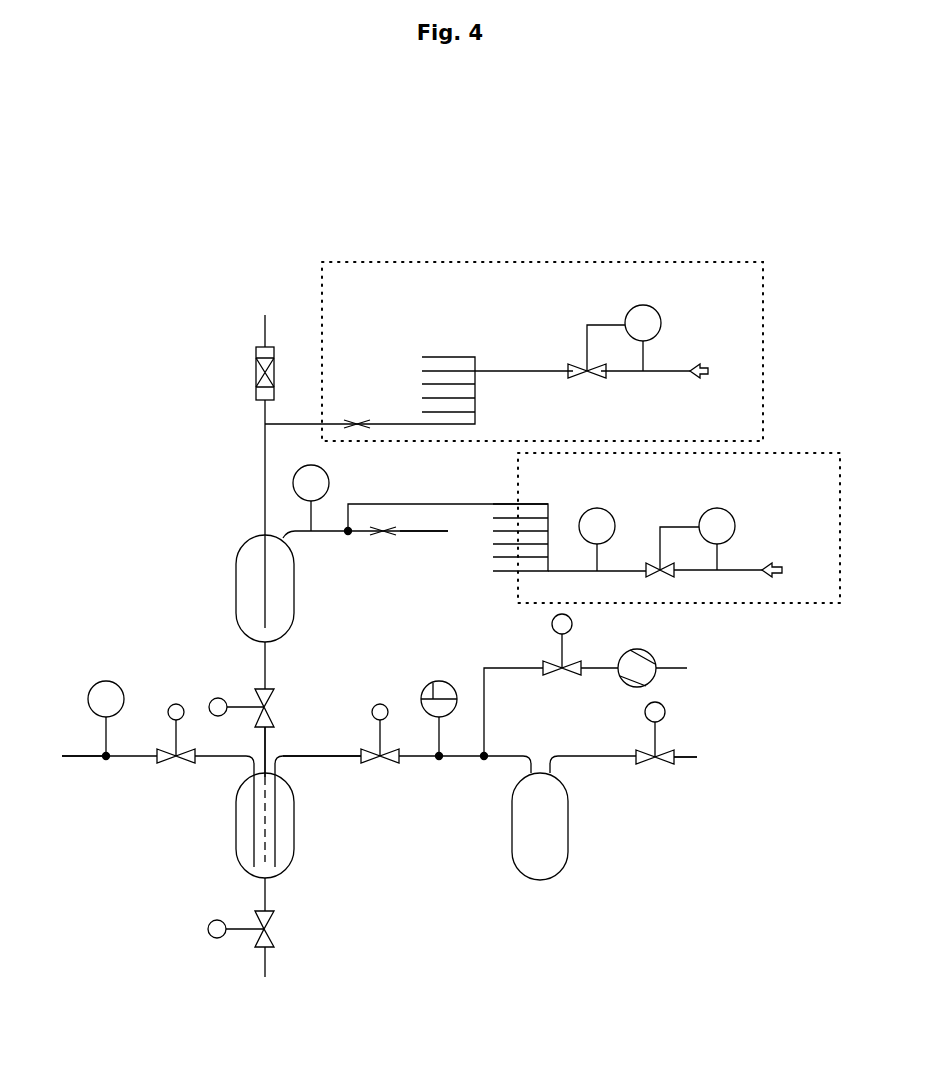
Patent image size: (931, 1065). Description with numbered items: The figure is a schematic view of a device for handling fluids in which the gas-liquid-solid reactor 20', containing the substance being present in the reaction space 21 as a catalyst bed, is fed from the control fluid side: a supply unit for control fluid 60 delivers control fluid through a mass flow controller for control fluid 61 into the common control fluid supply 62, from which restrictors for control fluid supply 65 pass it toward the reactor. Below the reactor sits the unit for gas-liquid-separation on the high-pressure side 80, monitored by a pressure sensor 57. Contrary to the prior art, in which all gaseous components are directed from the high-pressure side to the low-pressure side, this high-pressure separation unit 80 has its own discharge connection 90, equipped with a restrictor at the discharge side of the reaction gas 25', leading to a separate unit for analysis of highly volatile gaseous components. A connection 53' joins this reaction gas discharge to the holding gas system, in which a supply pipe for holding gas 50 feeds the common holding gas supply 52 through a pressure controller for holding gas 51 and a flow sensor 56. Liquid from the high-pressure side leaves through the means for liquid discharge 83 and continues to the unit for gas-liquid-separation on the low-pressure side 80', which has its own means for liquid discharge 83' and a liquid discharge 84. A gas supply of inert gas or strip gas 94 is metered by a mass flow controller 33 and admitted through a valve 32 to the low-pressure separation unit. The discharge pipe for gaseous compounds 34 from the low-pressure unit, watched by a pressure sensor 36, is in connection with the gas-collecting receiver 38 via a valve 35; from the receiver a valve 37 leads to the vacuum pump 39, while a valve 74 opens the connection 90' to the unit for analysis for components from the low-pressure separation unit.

The common control fluid supply 62 is at (430, 262).
The mass flow controller for control fluid 61 is at (577, 367).
The supply unit for control fluid 60 is at (705, 367).
The restrictors for control fluid supply 65 is at (367, 422).
The gas-liquid-solid reactor 20' is at (201, 360).
The substance being present in the reaction space 21 is at (257, 387).
The unit for gas-liquid-separation (high-pressure side) 80 is at (210, 588).
The pressure sensor 57 is at (330, 482).
The connection (holding gas supply—reaction gas discharge) 53' is at (480, 516).
The discharge connection from high-pressure separation unit to unit for analysis 90 is at (438, 531).
The restrictors at the discharge side of the reaction gas 25' is at (401, 553).
The flow sensor 56 is at (590, 510).
The pressure controller for holding gas 51 is at (707, 512).
The supply pipe for holding gas 50 is at (773, 565).
The common holding gas supply 52 is at (750, 603).
The vacuum pump 39 is at (648, 653).
The valve between gas-collecting receiver and vacuum pump 37 is at (545, 672).
The pressure sensor 36 is at (433, 688).
The mass flow controller 33 is at (100, 693).
The gas supply (inert gas or strip gas) 94 is at (66, 755).
The valve in pipe to the low-pressure separation unit 32 is at (157, 758).
The means for liquid discharge (high-pressure side) 83 is at (219, 694).
The liquid discharge (low-pressure side) 84 is at (265, 752).
The discharge pipe for gaseous compounds 34 is at (318, 755).
The valve between low-pressure separation unit and gas-collecting receiver 35 is at (362, 760).
The unit for gas-liquid-separation (low-pressure side) 80' is at (210, 825).
The means for liquid discharge (low-pressure side) 83' is at (200, 915).
The gas-collecting receiver 38 is at (522, 843).
The valve between gas-collecting receiver and unit for analysis 74 is at (633, 758).
The connection to unit for analysis for components from the low-pressure separation 90' is at (704, 756).